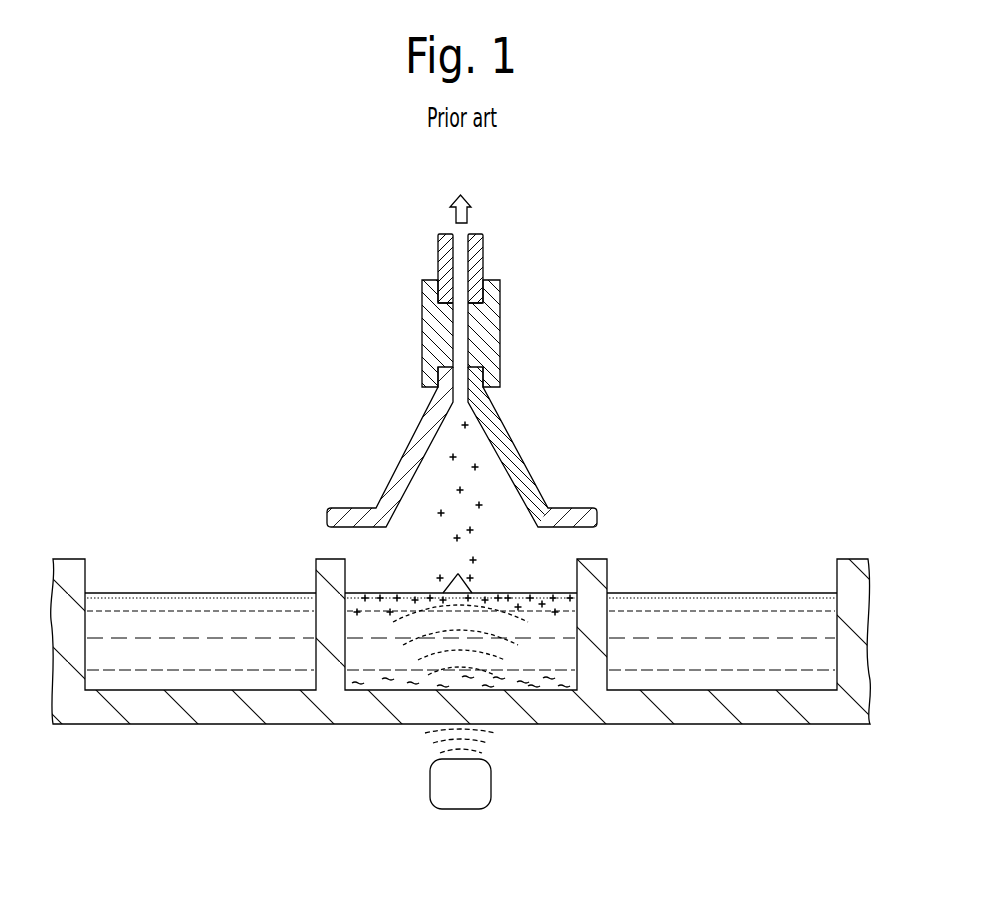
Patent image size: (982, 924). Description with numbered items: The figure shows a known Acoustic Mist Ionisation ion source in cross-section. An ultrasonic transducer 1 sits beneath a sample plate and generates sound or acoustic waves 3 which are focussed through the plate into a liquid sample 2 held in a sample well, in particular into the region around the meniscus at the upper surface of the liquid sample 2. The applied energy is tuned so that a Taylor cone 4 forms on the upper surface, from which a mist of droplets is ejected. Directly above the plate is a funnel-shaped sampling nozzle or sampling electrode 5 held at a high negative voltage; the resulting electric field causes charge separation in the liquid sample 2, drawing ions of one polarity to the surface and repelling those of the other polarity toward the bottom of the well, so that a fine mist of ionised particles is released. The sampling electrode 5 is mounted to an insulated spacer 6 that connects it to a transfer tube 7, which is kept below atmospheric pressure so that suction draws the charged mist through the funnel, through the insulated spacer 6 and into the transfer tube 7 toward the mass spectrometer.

The ultrasonic transducer 1 is at (465, 809).
The liquid sample 2 is at (365, 652).
The sound or acoustic waves 3 is at (482, 739).
The Taylor cone 4 is at (455, 571).
The sampling nozzle or sampling electrode 5 is at (597, 516).
The insulated spacer 6 is at (422, 333).
The transfer tube 7 is at (485, 240).